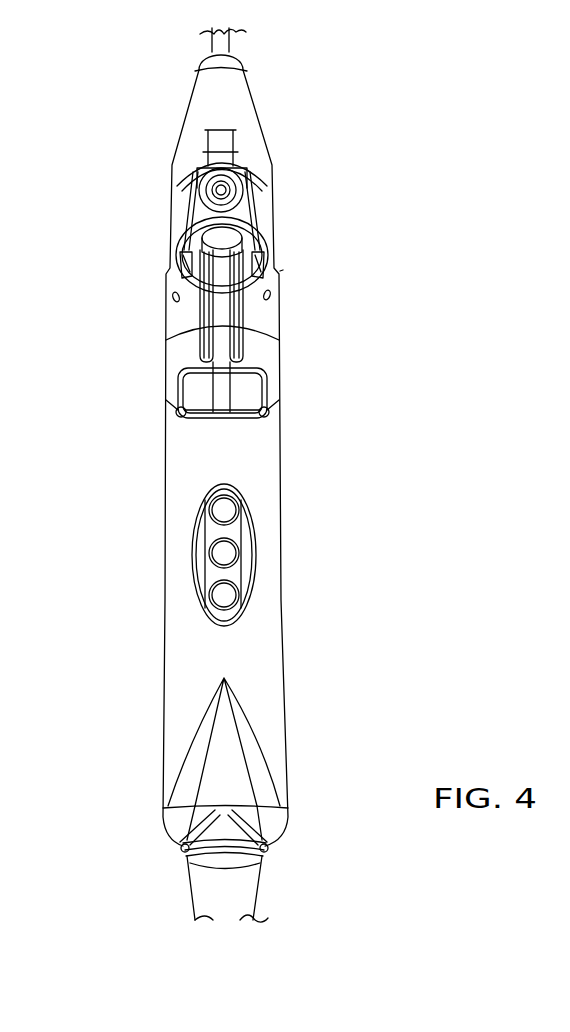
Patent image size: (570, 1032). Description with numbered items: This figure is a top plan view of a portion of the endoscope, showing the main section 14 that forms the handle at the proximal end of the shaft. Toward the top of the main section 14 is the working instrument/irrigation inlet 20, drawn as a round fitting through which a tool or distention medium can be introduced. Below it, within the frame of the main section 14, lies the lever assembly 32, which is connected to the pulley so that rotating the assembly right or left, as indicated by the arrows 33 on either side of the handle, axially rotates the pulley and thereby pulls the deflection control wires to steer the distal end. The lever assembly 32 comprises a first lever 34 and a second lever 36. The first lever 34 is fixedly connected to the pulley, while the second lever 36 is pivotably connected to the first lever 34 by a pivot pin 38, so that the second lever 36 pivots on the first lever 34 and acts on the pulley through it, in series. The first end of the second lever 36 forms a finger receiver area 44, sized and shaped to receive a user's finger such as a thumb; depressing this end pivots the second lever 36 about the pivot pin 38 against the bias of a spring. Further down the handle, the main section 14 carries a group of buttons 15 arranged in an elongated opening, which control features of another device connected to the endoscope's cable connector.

The main section 14 is at (282, 530).
The buttons 15 is at (200, 587).
The working instrument/irrigation inlet 20 is at (195, 173).
The lever assembly 32 is at (222, 303).
The arrows 33 is at (150, 395).
The first lever 34 is at (242, 238).
The second lever 36 is at (220, 341).
The pivot pin 38 is at (285, 270).
The finger receiver area 44 is at (202, 397).